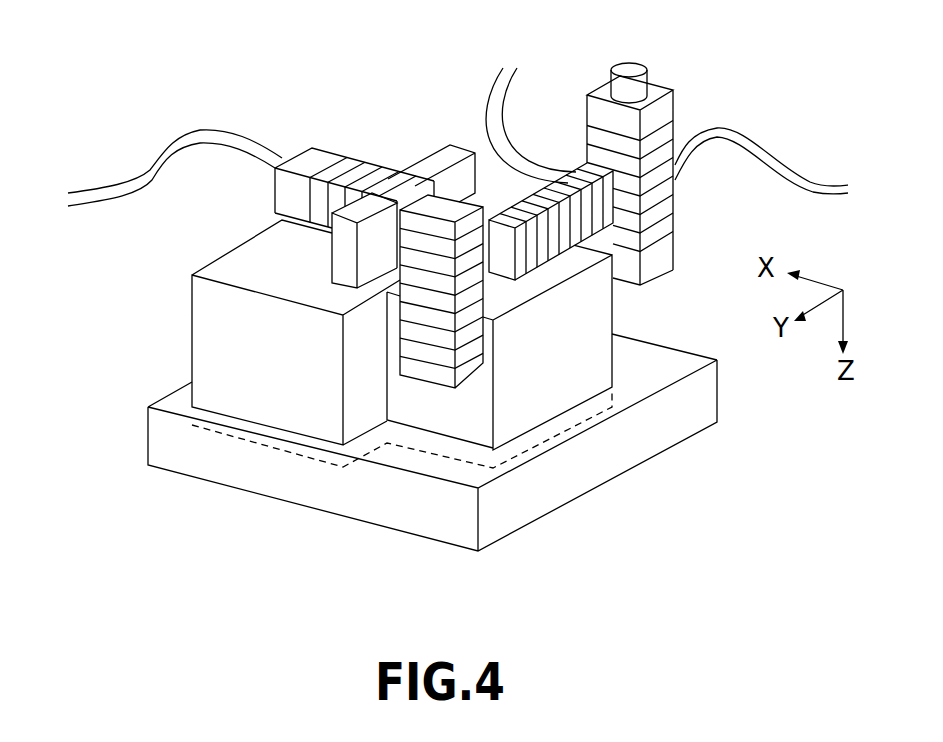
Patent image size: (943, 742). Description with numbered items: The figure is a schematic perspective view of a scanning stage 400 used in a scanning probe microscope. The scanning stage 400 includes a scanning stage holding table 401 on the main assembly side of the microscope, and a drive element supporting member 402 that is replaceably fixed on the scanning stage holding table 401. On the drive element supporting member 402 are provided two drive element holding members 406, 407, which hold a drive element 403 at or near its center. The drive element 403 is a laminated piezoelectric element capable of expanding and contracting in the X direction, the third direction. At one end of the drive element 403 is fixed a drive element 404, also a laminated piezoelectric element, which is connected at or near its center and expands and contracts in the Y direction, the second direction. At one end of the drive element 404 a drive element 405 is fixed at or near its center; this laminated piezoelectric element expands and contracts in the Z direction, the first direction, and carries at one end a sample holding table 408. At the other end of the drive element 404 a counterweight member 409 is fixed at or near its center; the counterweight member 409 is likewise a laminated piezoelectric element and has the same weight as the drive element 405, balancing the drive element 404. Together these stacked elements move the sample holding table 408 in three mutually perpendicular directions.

The scanning stage 400 is at (93, 110).
The scanning stage holding table 401 is at (700, 407).
The drive element supporting member 402 is at (207, 333).
The drive element 403 is at (493, 197).
The drive element 404 is at (530, 258).
The drive element 405 is at (648, 213).
The drive element holding member 406 is at (360, 200).
The drive element holding member 407 is at (430, 157).
The sample holding table 408 is at (648, 79).
The counterweight member 409 is at (423, 310).